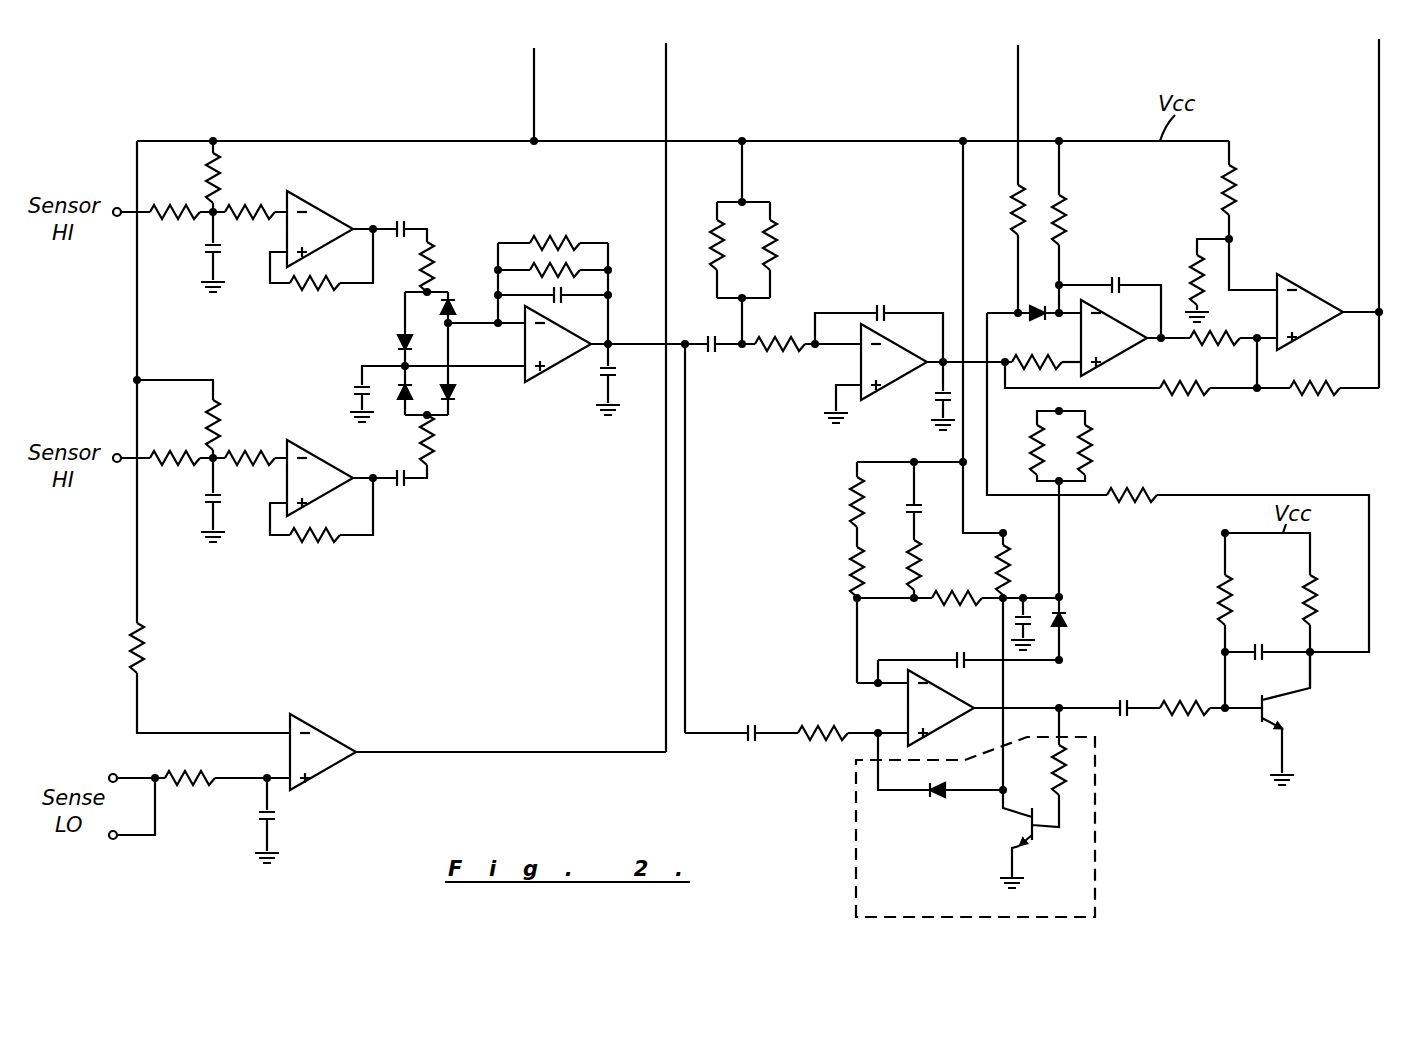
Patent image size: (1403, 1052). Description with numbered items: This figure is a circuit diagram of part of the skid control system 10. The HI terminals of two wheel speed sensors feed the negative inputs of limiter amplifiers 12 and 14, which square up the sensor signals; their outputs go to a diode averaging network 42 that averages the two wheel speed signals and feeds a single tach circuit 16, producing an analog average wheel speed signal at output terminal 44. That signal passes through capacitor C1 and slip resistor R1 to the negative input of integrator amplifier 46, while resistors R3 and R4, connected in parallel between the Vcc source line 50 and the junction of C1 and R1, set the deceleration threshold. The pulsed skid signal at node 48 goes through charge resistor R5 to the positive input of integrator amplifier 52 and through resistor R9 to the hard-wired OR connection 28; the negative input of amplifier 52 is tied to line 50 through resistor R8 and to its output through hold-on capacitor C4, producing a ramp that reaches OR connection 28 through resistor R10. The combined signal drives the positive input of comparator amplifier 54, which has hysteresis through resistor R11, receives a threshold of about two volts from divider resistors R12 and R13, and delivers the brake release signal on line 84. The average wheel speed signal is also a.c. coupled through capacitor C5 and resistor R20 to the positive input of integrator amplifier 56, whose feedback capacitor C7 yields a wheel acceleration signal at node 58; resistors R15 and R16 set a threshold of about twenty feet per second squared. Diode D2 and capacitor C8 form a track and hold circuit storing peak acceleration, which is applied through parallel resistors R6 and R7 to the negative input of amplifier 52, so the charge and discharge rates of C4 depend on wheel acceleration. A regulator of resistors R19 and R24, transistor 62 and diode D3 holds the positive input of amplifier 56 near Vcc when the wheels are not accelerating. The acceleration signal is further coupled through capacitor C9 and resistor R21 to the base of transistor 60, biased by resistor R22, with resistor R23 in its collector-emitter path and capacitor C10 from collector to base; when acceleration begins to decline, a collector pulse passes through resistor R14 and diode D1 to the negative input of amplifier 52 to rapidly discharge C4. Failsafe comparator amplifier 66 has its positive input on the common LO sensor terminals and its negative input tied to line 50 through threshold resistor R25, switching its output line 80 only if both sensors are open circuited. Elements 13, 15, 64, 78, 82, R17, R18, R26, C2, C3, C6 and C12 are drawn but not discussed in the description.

The skid control system 10 is at (547, 633).
The limiter amplifier 12 is at (339, 212).
The feedback resistor 13 is at (286, 284).
The limiter amplifier 14 is at (283, 439).
The feedback resistor 15 is at (290, 539).
The tach circuit 16 is at (563, 377).
The hard-wired OR connection 28 is at (1259, 392).
The diode averaging network 42 is at (386, 353).
The output terminal 44 is at (688, 348).
The integrator amplifier 46 is at (912, 342).
The node 48 is at (946, 358).
The Vcc source line 50 is at (848, 141).
The integrator amplifier 52 is at (1112, 355).
The comparator amplifier 54 is at (1307, 284).
The integrator amplifier 56 is at (945, 700).
The output node 58 is at (1065, 705).
The transistor 60 is at (1285, 700).
The transistor 62 is at (1040, 838).
The switching block 64 is at (1097, 836).
The comparator amplifier 66 is at (325, 730).
The line 78 is at (536, 89).
The output line 80 is at (667, 74).
The line 82 is at (1019, 70).
The line 84 is at (1379, 62).
The slip resistor R1 is at (783, 348).
The resistor R3 is at (712, 253).
The resistor R4 is at (775, 251).
The charge resistor R5 is at (1030, 344).
The resistor R6 is at (1035, 455).
The resistor R7 is at (1088, 458).
The resistor R8 is at (1065, 215).
The resistor R9 is at (1200, 403).
The resistor R10 is at (1203, 342).
The resistor R11 is at (1328, 398).
The resistor R12 is at (1212, 298).
The resistor R13 is at (1240, 188).
The resistor R14 is at (1155, 485).
The resistor R15 is at (853, 498).
The resistor R16 is at (853, 573).
The resistor R17 is at (920, 570).
The resistor R18 is at (935, 602).
The resistor R19 is at (1027, 659).
The resistor R20 is at (815, 728).
The resistor R21 is at (1180, 700).
The resistor R22 is at (1218, 593).
The resistor R23 is at (1305, 585).
The resistor R24 is at (1066, 775).
The threshold resistor R25 is at (142, 660).
The resistor R26 is at (200, 776).
The capacitor C1 is at (709, 334).
The capacitor C2 is at (888, 308).
The capacitor C3 is at (935, 393).
The hold-on capacitor C4 is at (1135, 262).
The capacitor C5 is at (748, 728).
The capacitor C6 is at (916, 505).
The capacitor C7 is at (968, 655).
The capacitor C8 is at (1035, 600).
The capacitor C9 is at (1135, 712).
The capacitor C10 is at (1265, 645).
The capacitor C12 is at (278, 815).
The diode D1 is at (1040, 308).
The diode D2 is at (1070, 620).
The diode D3 is at (940, 797).